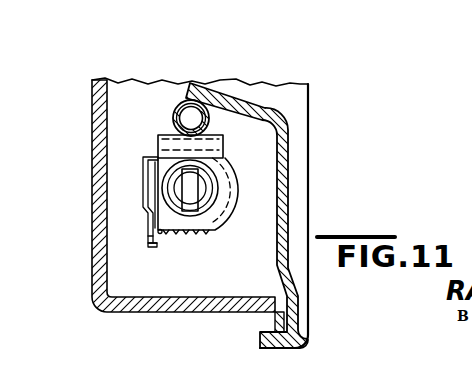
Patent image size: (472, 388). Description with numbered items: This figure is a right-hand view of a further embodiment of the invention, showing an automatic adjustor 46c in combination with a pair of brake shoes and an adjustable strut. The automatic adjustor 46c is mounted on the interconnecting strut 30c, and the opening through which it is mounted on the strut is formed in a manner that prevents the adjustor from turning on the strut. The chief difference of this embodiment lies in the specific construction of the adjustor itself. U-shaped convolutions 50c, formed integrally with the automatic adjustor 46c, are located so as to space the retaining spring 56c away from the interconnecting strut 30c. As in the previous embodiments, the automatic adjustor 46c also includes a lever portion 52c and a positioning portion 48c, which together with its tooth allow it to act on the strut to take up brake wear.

The interconnecting strut 30c is at (191, 215).
The automatic adjustor 46c is at (143, 200).
The positioning portion 48c is at (213, 168).
The U-shaped convolutions 50c is at (203, 147).
The lever portion 52c is at (143, 240).
The retaining spring 56c is at (188, 103).